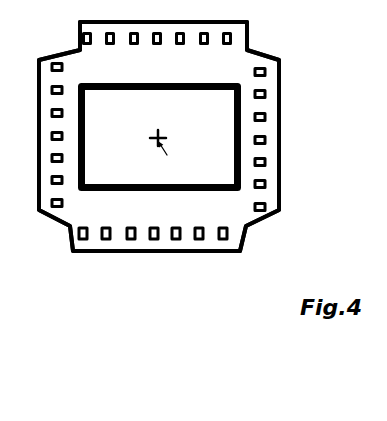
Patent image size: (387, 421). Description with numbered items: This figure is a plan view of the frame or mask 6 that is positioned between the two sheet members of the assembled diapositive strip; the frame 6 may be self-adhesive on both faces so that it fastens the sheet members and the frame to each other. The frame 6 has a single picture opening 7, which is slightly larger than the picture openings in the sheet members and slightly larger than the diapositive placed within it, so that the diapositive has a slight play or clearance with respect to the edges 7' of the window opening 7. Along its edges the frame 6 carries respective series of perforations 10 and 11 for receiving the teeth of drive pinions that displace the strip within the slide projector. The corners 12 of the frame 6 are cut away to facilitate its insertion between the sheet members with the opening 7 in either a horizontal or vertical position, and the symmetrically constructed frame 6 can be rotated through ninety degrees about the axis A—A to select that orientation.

The frame or mask 6 is at (257, 50).
The picture opening 7 is at (160, 137).
The edges of the frame window opening 7' is at (214, 139).
The perforations 10 is at (112, 33).
The perforations 11 is at (132, 243).
The corners of the frame 12 is at (60, 48).